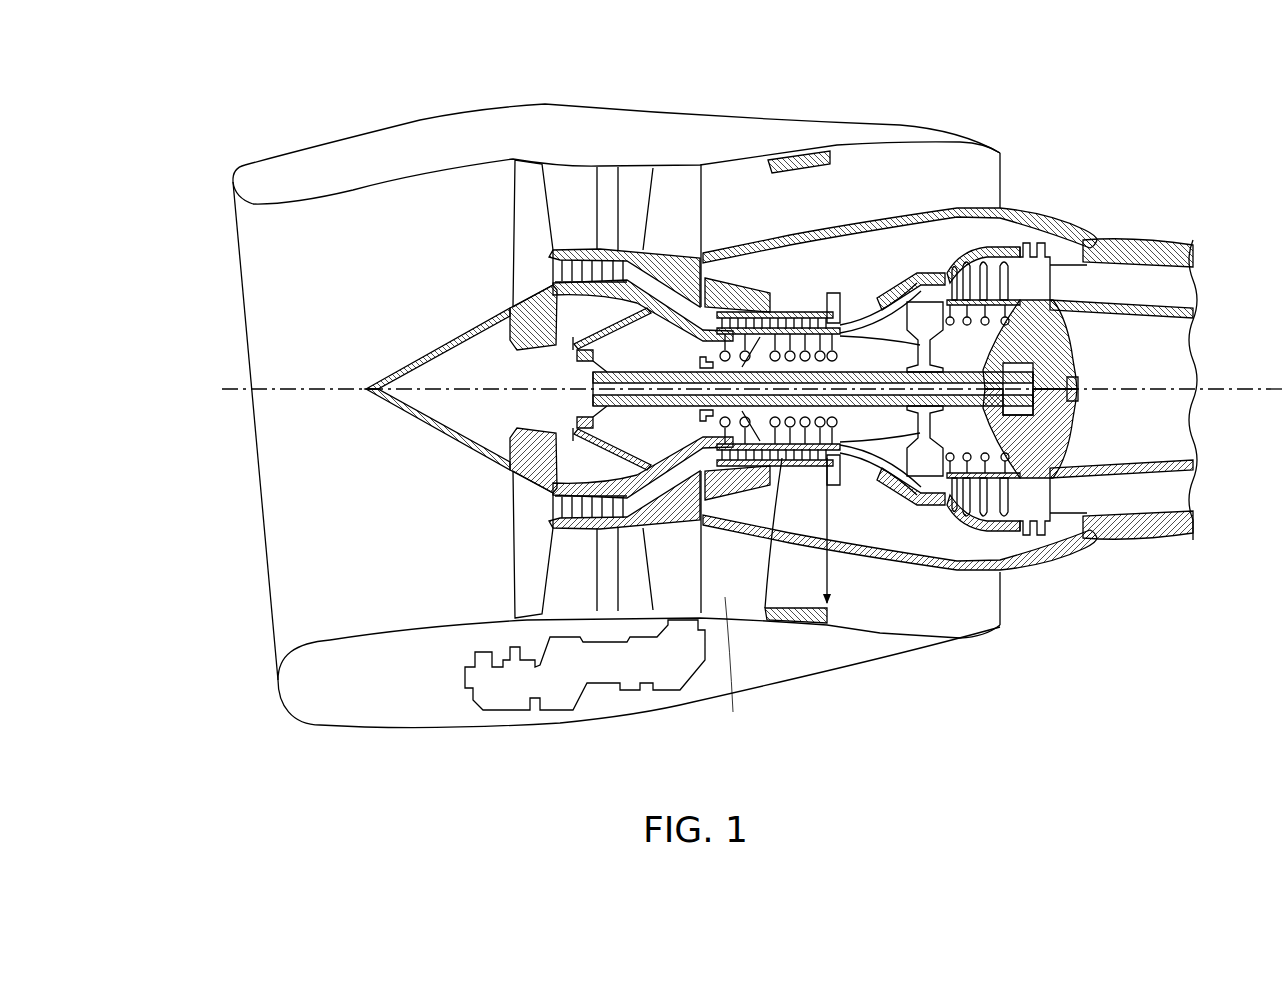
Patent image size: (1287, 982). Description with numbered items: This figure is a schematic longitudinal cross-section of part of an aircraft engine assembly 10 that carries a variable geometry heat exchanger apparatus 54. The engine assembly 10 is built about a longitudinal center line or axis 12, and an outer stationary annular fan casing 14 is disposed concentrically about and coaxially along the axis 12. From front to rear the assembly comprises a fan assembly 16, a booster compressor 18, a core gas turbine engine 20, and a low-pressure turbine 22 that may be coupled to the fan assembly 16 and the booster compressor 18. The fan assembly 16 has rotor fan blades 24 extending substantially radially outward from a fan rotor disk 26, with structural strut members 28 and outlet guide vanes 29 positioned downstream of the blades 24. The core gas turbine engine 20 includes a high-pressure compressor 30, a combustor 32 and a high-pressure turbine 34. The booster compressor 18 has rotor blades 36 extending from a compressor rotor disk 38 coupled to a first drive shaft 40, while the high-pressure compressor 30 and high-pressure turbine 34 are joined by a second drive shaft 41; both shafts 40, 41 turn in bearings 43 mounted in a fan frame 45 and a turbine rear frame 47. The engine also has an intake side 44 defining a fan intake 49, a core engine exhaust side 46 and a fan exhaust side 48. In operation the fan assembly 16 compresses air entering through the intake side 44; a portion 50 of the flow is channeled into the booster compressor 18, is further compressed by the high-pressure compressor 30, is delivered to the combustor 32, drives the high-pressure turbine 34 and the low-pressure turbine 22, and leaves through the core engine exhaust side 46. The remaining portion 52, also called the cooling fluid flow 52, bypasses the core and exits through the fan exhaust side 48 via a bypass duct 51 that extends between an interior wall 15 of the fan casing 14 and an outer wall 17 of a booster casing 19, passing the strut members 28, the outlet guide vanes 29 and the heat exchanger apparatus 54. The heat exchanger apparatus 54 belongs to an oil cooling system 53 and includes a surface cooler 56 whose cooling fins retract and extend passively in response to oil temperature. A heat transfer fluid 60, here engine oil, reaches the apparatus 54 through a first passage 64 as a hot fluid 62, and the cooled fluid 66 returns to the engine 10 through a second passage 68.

The aircraft engine assembly 10 is at (1150, 125).
The longitudinal center line or axis 12 is at (303, 385).
The annular fan casing 14 is at (553, 103).
The interior wall 15 is at (932, 143).
The fan assembly 16 is at (488, 210).
The outer wall 17 is at (773, 237).
The booster compressor 18 is at (567, 540).
The booster casing 19 is at (660, 520).
The core gas turbine engine 20 is at (852, 305).
The low-pressure turbine 22 is at (1000, 535).
The rotor fan blades 24 is at (525, 540).
The fan rotor disk 26 is at (525, 425).
The structural strut members 28 is at (607, 173).
The outlet guide vanes 29 is at (703, 209).
The high-pressure compressor 30 is at (785, 452).
The combustor 32 is at (840, 485).
The high-pressure turbine 34 is at (918, 475).
The rotor blades 36 is at (613, 498).
The compressor rotor disk 38 is at (567, 316).
The first drive shaft 40 is at (625, 357).
The second drive shaft 41 is at (1020, 427).
The bearings 43 is at (1053, 363).
The intake side 44 is at (210, 295).
The fan frame 45 is at (1077, 432).
The core engine exhaust side 46 is at (1177, 290).
The turbine rear frame 47 is at (1160, 240).
The fan exhaust side 48 is at (1015, 178).
The fan intake 49 is at (250, 575).
The portion of fluid flow 50 is at (575, 505).
The bypass duct 51 is at (770, 578).
The cooling fluid flow 52 is at (570, 210).
The oil cooling system 53 is at (830, 180).
The variable geometry heat exchanger apparatus 54 is at (803, 377).
The surface cooler 56 is at (813, 147).
The heat transfer fluid 60 is at (813, 596).
The hot fluid 62 is at (887, 537).
The first passage 64 is at (887, 537).
The cooled fluid 66 is at (736, 666).
The second passage 68 is at (736, 666).